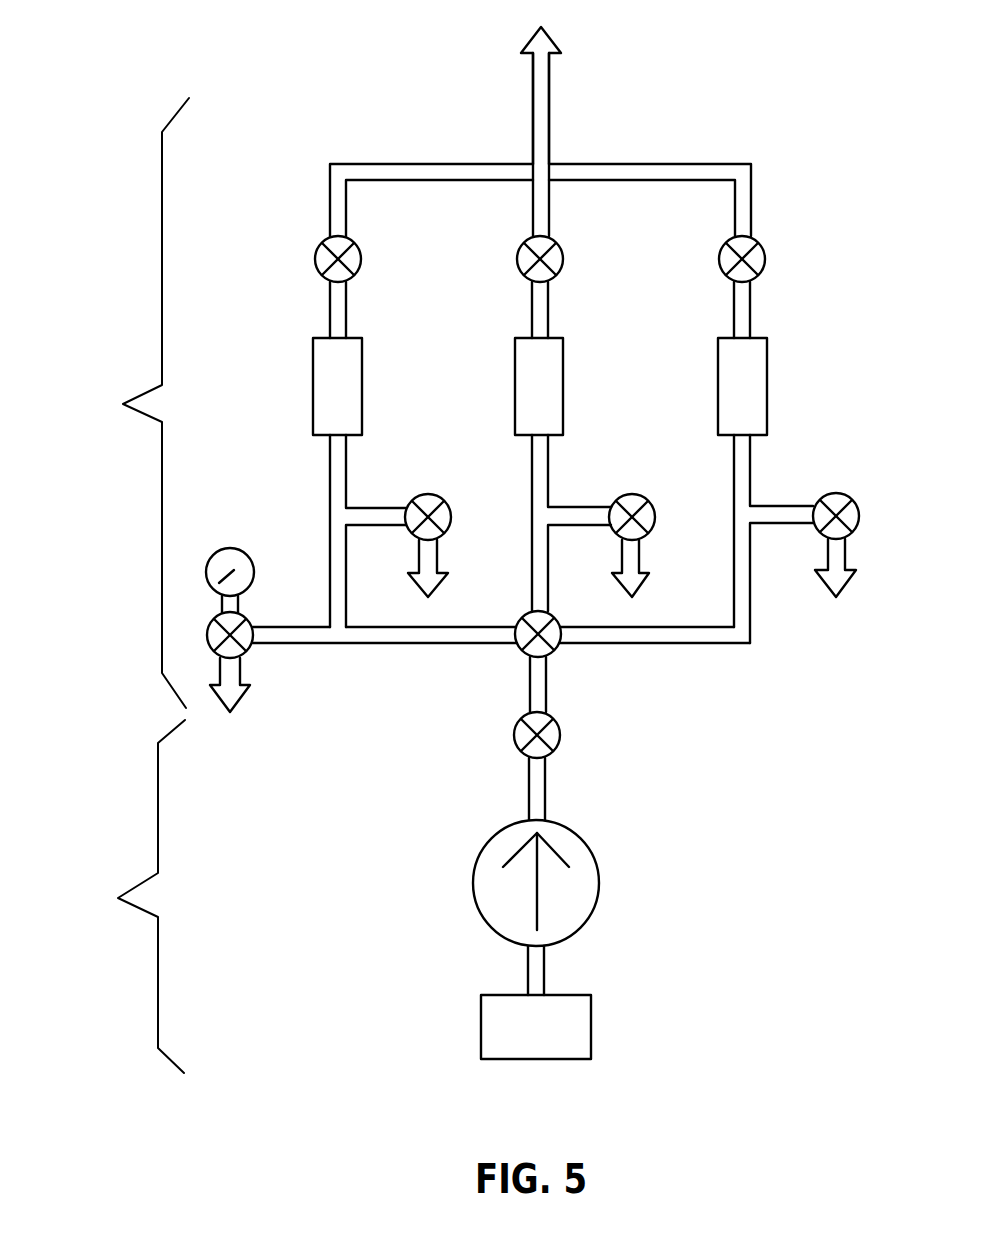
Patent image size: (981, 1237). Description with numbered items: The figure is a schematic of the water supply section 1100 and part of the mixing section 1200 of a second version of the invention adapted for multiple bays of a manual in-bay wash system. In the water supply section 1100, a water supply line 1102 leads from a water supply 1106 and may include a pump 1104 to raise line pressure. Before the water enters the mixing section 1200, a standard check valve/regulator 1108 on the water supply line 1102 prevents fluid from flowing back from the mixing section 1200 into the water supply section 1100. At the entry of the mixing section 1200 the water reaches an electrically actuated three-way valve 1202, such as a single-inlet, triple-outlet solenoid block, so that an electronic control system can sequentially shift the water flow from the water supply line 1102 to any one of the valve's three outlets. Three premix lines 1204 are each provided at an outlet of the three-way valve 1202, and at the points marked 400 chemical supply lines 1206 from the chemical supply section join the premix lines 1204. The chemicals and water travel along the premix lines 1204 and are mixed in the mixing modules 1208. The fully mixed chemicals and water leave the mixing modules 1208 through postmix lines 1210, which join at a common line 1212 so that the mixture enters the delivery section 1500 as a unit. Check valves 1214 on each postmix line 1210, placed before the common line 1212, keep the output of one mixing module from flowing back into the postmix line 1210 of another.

The delivery section 1500 is at (551, 82).
The common line 1212 is at (549, 105).
The postmix lines 1210 is at (330, 200).
The check valves 1214 is at (315, 261).
The mixing modules 1208 is at (313, 390).
The premix lines 1204 is at (330, 603).
The chemical supply lines 1206 is at (437, 560).
The drain 400 is at (626, 583).
The three-way valve 1202 is at (550, 653).
The check valve/regulator 1108 is at (560, 735).
The pump 1104 is at (600, 885).
The water supply line 1102 is at (544, 968).
The water supply 1106 is at (591, 1028).
The mixing section 1200 is at (118, 403).
The water supply section 1100 is at (112, 896).